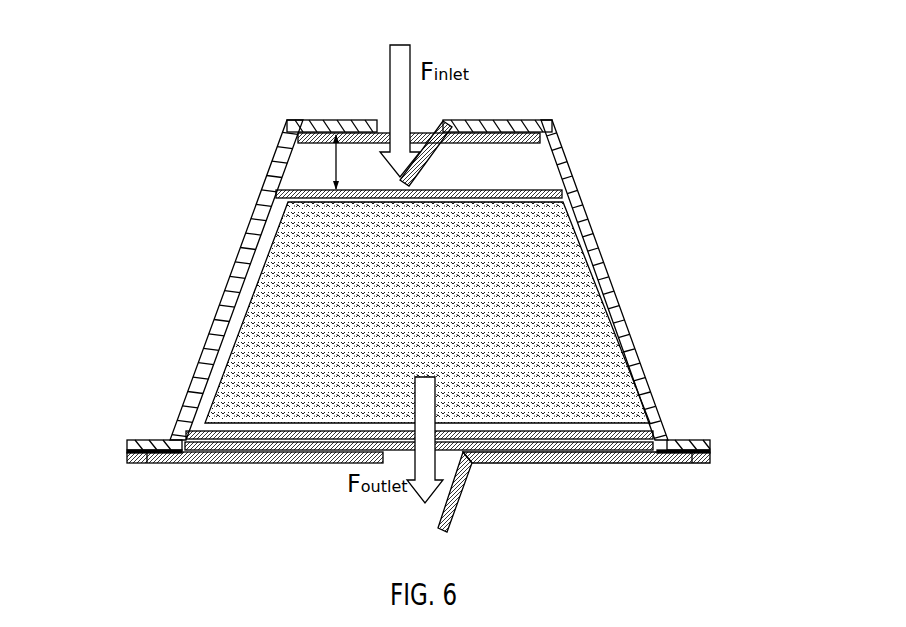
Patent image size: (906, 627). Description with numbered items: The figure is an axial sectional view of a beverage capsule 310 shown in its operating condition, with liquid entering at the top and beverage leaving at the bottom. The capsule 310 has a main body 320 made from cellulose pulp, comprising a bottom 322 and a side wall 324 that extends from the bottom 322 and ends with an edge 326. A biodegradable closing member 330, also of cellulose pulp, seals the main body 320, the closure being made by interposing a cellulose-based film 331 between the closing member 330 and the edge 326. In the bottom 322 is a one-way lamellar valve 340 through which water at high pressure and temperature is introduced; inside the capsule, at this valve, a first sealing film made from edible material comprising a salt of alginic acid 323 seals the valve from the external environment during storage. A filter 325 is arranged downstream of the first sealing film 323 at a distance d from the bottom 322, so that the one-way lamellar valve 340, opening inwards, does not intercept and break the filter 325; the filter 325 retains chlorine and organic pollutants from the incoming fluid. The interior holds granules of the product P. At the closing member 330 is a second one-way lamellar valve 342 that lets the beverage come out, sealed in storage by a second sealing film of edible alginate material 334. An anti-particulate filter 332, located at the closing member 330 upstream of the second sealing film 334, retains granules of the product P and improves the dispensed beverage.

The capsule 310 is at (618, 86).
The main body 320 is at (446, 280).
The bottom 322 is at (323, 120).
The first sealing film made from edible material comprising at least one salt of alg 323 is at (553, 130).
The side wall 324 is at (241, 275).
The filter 325 is at (303, 187).
The edge 326 is at (156, 440).
The closing member 330 is at (255, 465).
The cellulose-based film 331 is at (147, 463).
The anti-particulate filter 332 is at (333, 439).
The second sealing film made from edible material comprising at least one salt of al 334 is at (563, 446).
The one-way lamellar valve 340 is at (432, 162).
The one-way lamellar valve 342 is at (467, 483).
The product P is at (300, 258).
The distance d is at (344, 162).